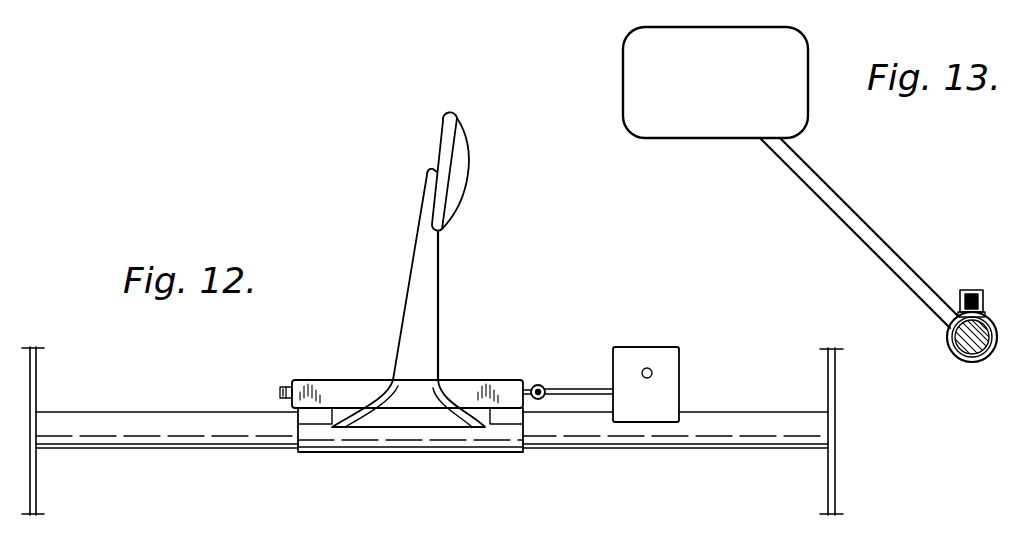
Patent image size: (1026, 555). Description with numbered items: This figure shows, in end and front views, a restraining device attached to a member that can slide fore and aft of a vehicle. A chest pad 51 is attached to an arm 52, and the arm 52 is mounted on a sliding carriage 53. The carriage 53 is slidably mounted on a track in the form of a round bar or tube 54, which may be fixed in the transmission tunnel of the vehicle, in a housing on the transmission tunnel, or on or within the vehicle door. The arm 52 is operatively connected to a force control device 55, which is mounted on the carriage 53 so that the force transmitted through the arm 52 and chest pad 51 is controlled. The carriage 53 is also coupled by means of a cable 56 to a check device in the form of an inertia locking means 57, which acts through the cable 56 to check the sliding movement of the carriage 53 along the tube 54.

In FIG. 12, the chest pad 51 is at (467, 163).
In FIG. 13, the chest pad 51 is at (716, 82).
In FIG. 12, the arm 52 is at (430, 273).
In FIG. 13, the arm 52 is at (860, 215).
In FIG. 12, the sliding carriage 53 is at (456, 448).
In FIG. 13, the sliding carriage 53 is at (975, 362).
In FIG. 12, the round bar or tube 54 is at (206, 430).
In FIG. 13, the round bar or tube 54 is at (953, 353).
In FIG. 12, the force control device 55 is at (497, 383).
In FIG. 13, the force control device 55 is at (978, 290).
In FIG. 12, the cable 56 is at (560, 388).
In FIG. 12, the inertia locking means 57 is at (668, 378).